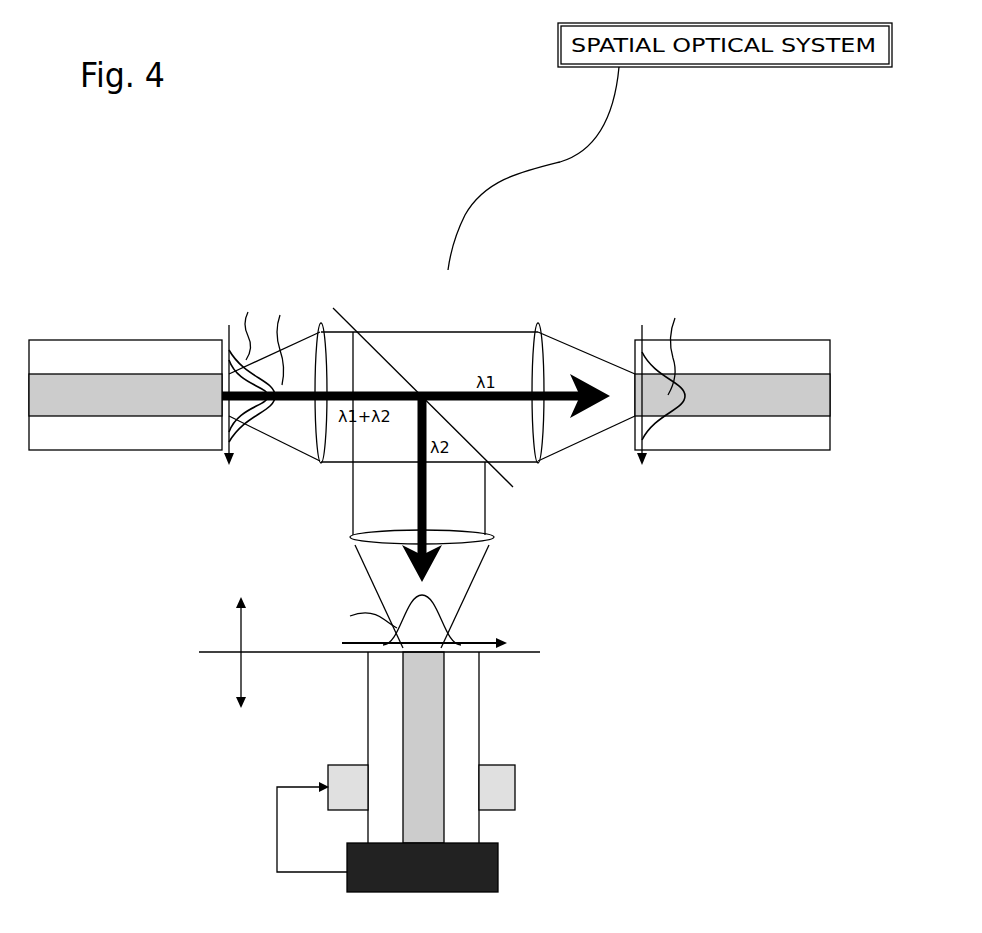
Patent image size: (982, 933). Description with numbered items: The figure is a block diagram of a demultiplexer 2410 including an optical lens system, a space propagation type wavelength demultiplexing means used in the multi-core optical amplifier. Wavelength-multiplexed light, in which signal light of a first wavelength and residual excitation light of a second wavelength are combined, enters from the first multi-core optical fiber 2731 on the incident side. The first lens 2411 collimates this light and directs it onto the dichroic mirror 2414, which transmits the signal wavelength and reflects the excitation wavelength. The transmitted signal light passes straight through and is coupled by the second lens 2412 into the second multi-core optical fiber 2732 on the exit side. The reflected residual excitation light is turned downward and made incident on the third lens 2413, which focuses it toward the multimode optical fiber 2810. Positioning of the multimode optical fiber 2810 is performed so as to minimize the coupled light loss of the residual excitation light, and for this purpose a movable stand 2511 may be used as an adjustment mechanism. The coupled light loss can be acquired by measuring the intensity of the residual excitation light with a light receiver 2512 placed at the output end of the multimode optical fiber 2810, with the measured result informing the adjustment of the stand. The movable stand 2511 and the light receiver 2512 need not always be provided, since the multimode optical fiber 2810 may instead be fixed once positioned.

The demultiplexer including an optical lens system 2410 is at (455, 205).
The first lens 2411 is at (321, 323).
The second lens 2412 is at (538, 323).
The third lens 2413 is at (494, 537).
The dichroic mirror 2414 is at (377, 347).
The first multi-core optical fiber 2731 is at (75, 340).
The second multi-core optical fiber 2732 is at (780, 340).
The multimode optical fiber 2810 is at (480, 697).
The movable stand 2511 is at (516, 788).
The light receiver 2512 is at (499, 869).